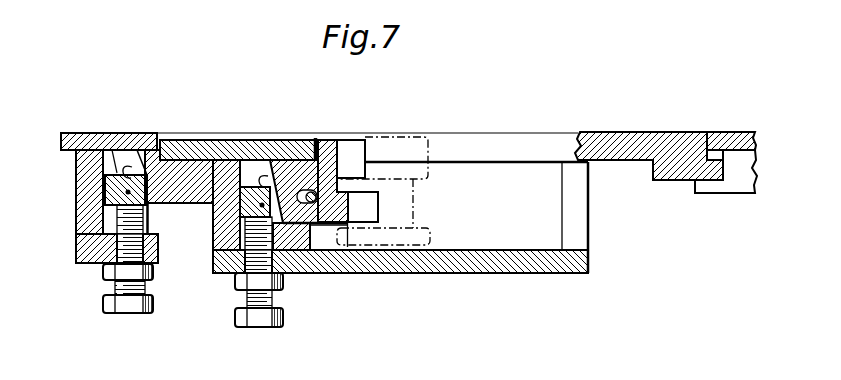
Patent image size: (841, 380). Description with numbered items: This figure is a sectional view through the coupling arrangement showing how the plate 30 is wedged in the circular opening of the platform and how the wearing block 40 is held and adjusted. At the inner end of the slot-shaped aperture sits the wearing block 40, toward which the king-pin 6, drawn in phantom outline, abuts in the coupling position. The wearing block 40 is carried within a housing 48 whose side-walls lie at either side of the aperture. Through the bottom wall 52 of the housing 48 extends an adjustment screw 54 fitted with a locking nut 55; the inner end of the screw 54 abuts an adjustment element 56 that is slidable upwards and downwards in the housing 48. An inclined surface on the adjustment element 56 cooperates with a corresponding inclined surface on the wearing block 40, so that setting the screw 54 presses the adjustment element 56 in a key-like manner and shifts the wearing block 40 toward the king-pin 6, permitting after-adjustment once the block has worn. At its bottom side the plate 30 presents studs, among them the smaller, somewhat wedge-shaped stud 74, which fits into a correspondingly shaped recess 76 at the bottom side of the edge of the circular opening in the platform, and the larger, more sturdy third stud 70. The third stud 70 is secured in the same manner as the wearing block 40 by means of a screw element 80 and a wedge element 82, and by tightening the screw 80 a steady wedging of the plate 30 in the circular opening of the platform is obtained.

The king-pin 6 is at (402, 214).
The plate 30 is at (188, 140).
The wearing block 40 is at (333, 140).
The housing 48 is at (212, 243).
The bottom wall 52 is at (512, 262).
The adjustment screw 54 is at (238, 296).
The locking nut 55 is at (284, 283).
The adjustment element 56 is at (249, 195).
The third stud 70 is at (193, 204).
The stud 74 is at (667, 181).
The recess 76 is at (712, 177).
The screw element 80 is at (116, 290).
The wedge element 82 is at (120, 163).